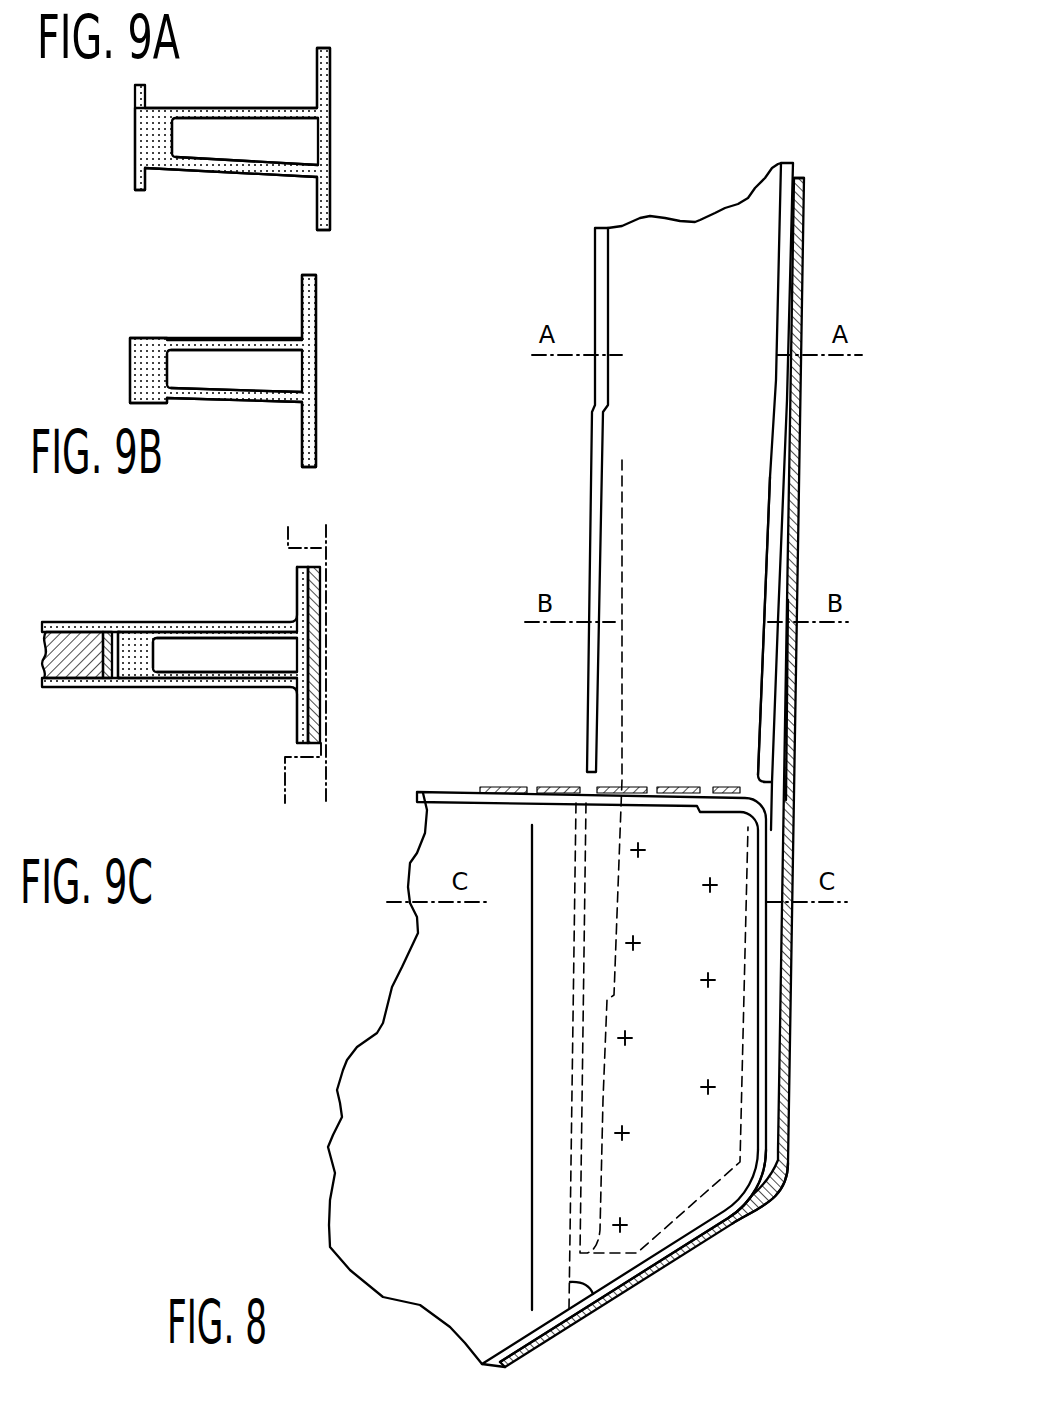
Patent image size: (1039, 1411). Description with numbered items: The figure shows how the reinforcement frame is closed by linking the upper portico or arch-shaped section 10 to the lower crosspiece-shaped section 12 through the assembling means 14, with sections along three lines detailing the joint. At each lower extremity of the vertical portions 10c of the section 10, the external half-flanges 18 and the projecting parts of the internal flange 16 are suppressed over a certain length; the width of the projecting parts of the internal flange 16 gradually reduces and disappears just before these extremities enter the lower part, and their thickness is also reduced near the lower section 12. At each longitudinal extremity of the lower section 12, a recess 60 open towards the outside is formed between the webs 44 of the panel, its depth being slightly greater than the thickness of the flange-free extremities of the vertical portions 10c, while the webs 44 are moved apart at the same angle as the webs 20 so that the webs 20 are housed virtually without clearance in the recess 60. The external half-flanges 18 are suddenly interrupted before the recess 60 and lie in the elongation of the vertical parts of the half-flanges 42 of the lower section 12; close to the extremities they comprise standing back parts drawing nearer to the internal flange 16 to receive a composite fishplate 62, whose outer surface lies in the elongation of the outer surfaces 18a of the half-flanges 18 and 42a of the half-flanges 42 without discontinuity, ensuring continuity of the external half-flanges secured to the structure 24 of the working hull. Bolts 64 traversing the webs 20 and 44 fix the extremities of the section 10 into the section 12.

In FIG. 9A, the upper portico or arch-shaped section 10 is at (210, 172).
In FIG. 9B, the upper portico or arch-shaped section 10 is at (146, 328).
In FIG. 9C, the upper portico or arch-shaped section 10 is at (197, 616).
In FIG. 8, the upper portico or arch-shaped section 10 is at (695, 214).
In FIG. 8, the vertical portions 10c is at (722, 552).
In FIG. 9C, the lower crosspiece-shaped section 12 is at (58, 690).
In FIG. 8, the lower crosspiece-shaped section 12 is at (333, 1098).
In FIG. 8, the assembling means 14 is at (798, 1185).
In FIG. 9A, the internal flange 16 is at (133, 138).
In FIG. 9B, the internal flange 16 is at (143, 366).
In FIG. 9C, the internal flange 16 is at (145, 653).
In FIG. 8, the internal flange 16 is at (597, 242).
In FIG. 9A, the external half-flanges 18 is at (327, 200).
In FIG. 9B, the external half-flanges 18 is at (307, 433).
In FIG. 8, the external half-flanges 18 is at (785, 278).
In FIG. 8, the outer surfaces of the half-flanges 18a is at (802, 170).
In FIG. 9A, the webs 20 is at (253, 165).
In FIG. 9B, the webs 20 is at (230, 392).
In FIG. 9C, the webs 20 is at (280, 667).
In FIG. 9C, the structure of the working hull 24 is at (285, 803).
In FIG. 8, the structure of the working hull 24 is at (677, 1258).
In FIG. 9C, the half-flanges of the lower part 42 is at (321, 578).
In FIG. 8, the half-flanges of the lower part 42 is at (455, 790).
In FIG. 8, the outer surfaces of the half-flanges of the lower part 42a is at (768, 1063).
In FIG. 9C, the webs of the panel 44 is at (123, 620).
In FIG. 8, the webs of the panel 44 is at (380, 1197).
In FIG. 9C, the recess 60 is at (115, 662).
In FIG. 8, the recess 60 is at (603, 1308).
In FIG. 9C, the fishplate 62 is at (311, 660).
In FIG. 8, the fishplate 62 is at (782, 733).
In FIG. 8, the bolts 64 is at (705, 1087).